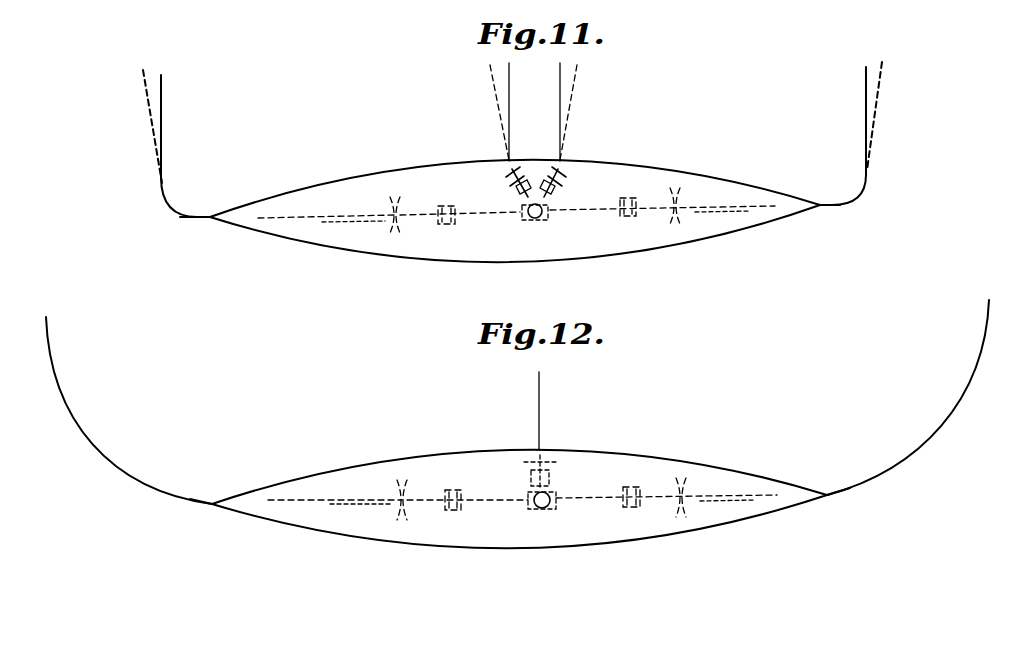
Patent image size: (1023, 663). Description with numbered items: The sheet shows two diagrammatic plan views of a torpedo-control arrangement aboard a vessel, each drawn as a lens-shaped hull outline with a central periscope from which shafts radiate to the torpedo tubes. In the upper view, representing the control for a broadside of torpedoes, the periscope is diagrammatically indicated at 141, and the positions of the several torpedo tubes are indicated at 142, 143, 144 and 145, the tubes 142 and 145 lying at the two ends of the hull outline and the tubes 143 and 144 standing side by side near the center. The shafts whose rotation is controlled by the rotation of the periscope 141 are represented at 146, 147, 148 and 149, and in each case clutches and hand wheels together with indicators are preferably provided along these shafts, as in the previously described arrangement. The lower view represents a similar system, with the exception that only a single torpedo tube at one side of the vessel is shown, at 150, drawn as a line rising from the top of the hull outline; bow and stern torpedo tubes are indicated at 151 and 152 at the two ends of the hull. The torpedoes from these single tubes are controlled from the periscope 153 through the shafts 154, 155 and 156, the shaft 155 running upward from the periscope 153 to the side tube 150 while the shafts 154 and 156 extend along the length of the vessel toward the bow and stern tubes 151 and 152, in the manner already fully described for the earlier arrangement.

In FIG. 11, the periscope 141 is at (536, 213).
In FIG. 11, the torpedo tube 142 is at (210, 217).
In FIG. 11, the torpedo tube 143 is at (507, 162).
In FIG. 11, the torpedo tube 144 is at (562, 162).
In FIG. 11, the torpedo tube 145 is at (820, 205).
In FIG. 11, the shaft 146 is at (505, 218).
In FIG. 11, the shaft 147 is at (518, 200).
In FIG. 11, the shaft 148 is at (555, 200).
In FIG. 11, the shaft 149 is at (590, 216).
In FIG. 12, the torpedo tube 150 is at (541, 450).
In FIG. 12, the bow torpedo tube 151 is at (212, 504).
In FIG. 12, the stern torpedo tube 152 is at (827, 495).
In FIG. 12, the periscope 153 is at (545, 506).
In FIG. 12, the shaft 154 is at (512, 505).
In FIG. 12, the shaft 155 is at (530, 488).
In FIG. 12, the shaft 156 is at (585, 495).